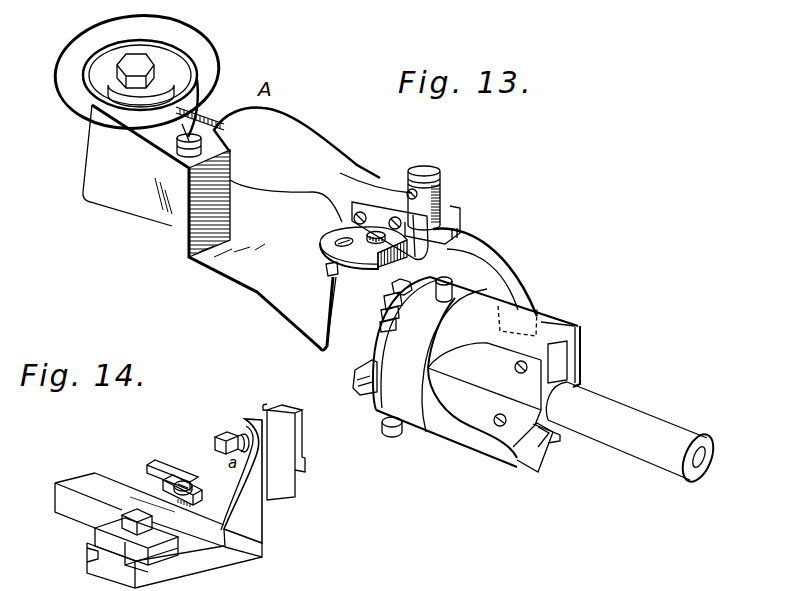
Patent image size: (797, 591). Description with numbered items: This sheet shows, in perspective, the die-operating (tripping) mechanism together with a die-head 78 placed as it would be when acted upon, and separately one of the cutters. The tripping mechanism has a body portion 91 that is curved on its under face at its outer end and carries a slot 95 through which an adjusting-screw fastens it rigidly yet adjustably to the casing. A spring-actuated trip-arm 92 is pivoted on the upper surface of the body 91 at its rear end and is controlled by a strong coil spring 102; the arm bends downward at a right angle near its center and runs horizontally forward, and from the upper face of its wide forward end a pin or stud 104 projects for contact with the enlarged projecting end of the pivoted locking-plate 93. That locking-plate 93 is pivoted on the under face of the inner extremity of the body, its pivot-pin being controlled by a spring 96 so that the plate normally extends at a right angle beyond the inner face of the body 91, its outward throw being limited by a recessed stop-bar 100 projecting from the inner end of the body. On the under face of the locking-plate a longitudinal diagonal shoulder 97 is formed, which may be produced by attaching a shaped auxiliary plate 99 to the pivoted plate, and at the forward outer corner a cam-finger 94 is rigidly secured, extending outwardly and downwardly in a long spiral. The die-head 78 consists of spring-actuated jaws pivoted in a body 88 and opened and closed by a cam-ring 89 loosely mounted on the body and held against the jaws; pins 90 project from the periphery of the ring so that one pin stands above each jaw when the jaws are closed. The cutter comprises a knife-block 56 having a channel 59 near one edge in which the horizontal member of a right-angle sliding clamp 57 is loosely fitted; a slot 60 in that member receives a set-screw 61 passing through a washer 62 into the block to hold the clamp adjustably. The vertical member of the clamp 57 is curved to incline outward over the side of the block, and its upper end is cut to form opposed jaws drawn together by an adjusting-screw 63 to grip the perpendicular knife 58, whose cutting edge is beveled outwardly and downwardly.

In FIG. 13, the spring 102 is at (213, 27).
In FIG. 13, the slot 95 is at (215, 112).
In FIG. 13, the body portion 91 is at (313, 165).
In FIG. 13, the trip-arm 92 is at (208, 227).
In FIG. 13, the spring 96 is at (441, 172).
In FIG. 13, the stop-bar 100 is at (390, 231).
In FIG. 13, the auxiliary plate 99 is at (320, 252).
In FIG. 13, the locking-plate 93 is at (373, 246).
In FIG. 13, the pin or stud 104 is at (327, 280).
In FIG. 13, the diagonal shoulder 97 is at (347, 272).
In FIG. 13, the cam-finger 94 is at (485, 272).
In FIG. 13, the die-head 78 is at (532, 317).
In FIG. 13, the cam-ring 89 is at (465, 372).
In FIG. 13, the body 88 is at (573, 392).
In FIG. 13, the pins 90 is at (399, 435).
In FIG. 14, the knife-block 56 is at (213, 558).
In FIG. 14, the channel 59 is at (158, 464).
In FIG. 14, the slot 60 is at (148, 482).
In FIG. 14, the set-screw 61 is at (184, 481).
In FIG. 14, the washer 62 is at (197, 486).
In FIG. 14, the sliding clamp 57 is at (241, 481).
In FIG. 14, the knife 58 is at (284, 452).
In FIG. 14, the adjusting-screw 63 is at (228, 430).